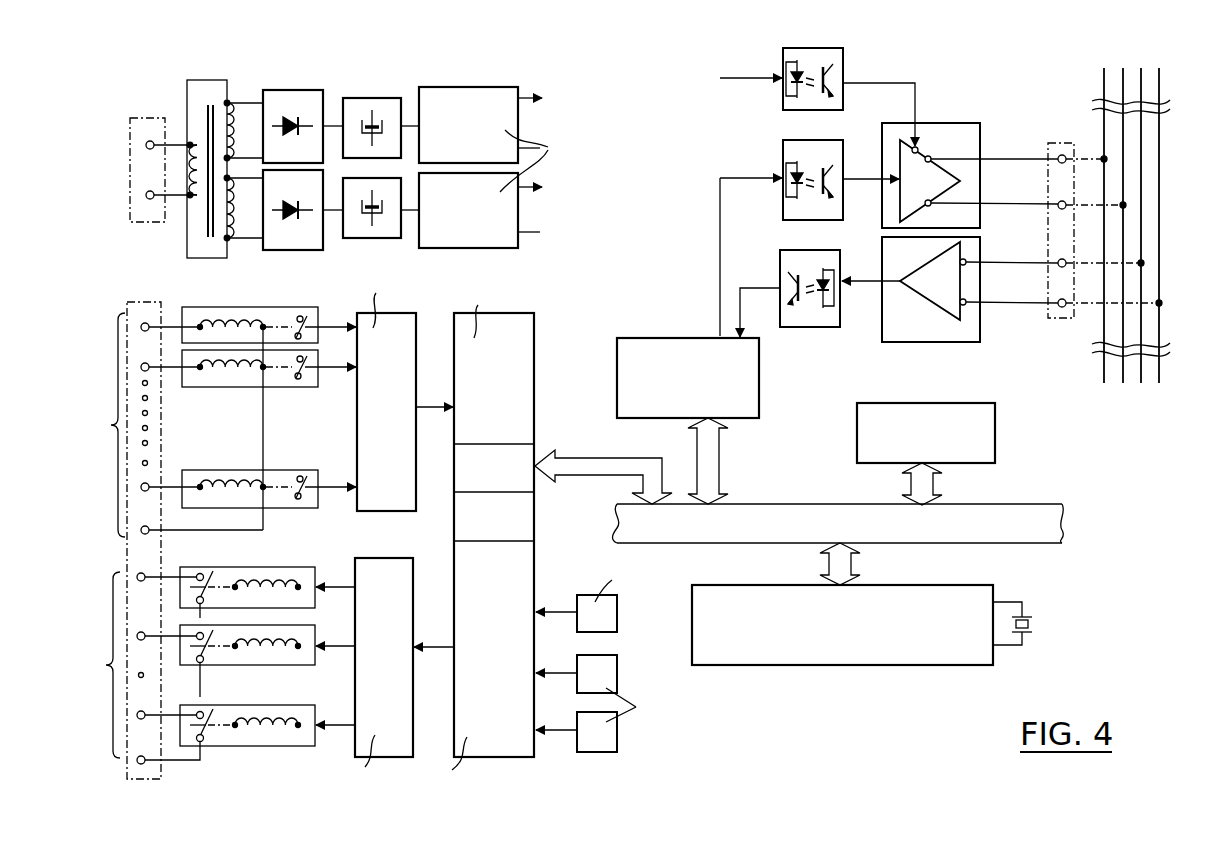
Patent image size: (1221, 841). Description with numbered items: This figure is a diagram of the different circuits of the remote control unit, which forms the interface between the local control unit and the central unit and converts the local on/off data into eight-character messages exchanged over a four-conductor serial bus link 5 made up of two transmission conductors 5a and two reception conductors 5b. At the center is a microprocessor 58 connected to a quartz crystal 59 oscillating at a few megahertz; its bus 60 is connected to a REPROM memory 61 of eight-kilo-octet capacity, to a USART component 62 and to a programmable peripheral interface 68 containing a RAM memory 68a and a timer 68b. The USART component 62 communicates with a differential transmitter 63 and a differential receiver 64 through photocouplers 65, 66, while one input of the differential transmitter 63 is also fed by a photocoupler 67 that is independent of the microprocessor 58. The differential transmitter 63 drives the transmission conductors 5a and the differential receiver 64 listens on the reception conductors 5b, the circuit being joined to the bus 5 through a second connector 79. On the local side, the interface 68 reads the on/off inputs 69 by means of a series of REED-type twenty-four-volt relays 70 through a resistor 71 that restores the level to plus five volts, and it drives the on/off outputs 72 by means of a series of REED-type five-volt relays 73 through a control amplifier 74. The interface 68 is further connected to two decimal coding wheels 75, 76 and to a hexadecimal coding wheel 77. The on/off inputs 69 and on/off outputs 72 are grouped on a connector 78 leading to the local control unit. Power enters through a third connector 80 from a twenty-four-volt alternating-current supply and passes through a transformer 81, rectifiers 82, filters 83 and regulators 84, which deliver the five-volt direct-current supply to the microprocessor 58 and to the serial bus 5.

The bus link 5 is at (1153, 168).
The transmission conductors 5a is at (1105, 188).
The reception conductors 5b is at (1140, 245).
The microprocessor 58 is at (893, 647).
The quartz crystal 59 is at (1032, 625).
The bus 60 is at (1003, 522).
The REPROM memory 61 is at (983, 422).
The USART component 62 is at (745, 393).
The differential transmitter 63 is at (945, 135).
The differential receiver 64 is at (940, 328).
The photocoupler 65 is at (783, 148).
The photocoupler 66 is at (783, 262).
The photocoupler 67 is at (783, 108).
The interface 68 is at (510, 575).
The RAM memory 68a is at (518, 513).
The timer 68b is at (522, 455).
The on/off inputs 69 is at (112, 425).
The relays 70 is at (280, 320).
The resistor 71 is at (390, 332).
The on/off outputs 72 is at (109, 668).
The relays 73 is at (258, 574).
The control amplifier 74 is at (375, 578).
The decimal coding wheel 75 is at (612, 603).
The decimal coding wheel 76 is at (617, 672).
The hexadecimal coding wheel 77 is at (617, 738).
The connector 78 is at (145, 302).
The second connector 79 is at (1060, 143).
The third connector 80 is at (145, 118).
The transformer 81 is at (208, 90).
The rectifiers 82 is at (300, 102).
The filters 83 is at (383, 107).
The regulators 84 is at (488, 98).